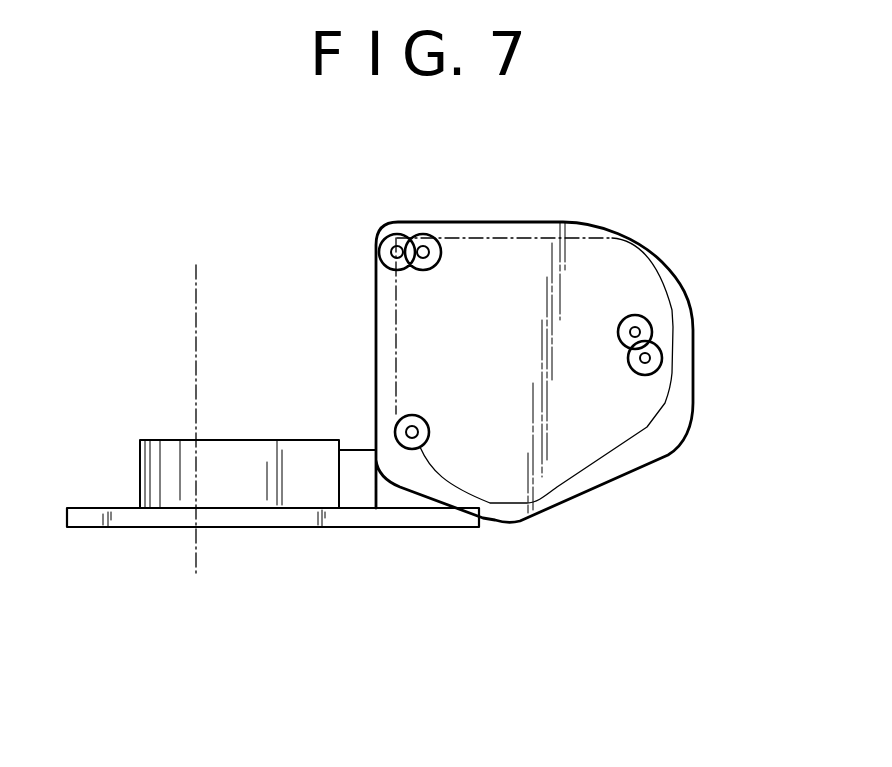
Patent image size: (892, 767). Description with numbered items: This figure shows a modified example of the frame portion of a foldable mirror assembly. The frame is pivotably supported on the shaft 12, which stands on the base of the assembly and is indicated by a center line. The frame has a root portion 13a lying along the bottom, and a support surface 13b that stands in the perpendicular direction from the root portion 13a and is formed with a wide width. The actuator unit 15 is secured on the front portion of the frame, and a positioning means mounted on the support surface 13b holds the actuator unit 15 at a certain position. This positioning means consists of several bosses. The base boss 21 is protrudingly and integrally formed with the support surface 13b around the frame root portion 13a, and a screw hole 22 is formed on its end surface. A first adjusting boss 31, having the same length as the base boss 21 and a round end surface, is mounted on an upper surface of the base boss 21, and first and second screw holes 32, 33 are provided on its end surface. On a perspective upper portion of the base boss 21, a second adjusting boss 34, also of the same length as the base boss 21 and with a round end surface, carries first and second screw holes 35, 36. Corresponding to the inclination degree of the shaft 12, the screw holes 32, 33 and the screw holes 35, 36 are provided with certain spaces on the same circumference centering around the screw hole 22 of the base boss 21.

The shaft 12 is at (196, 310).
The root portion 13a is at (277, 520).
The support surface 13b is at (662, 443).
The actuator unit 15 is at (587, 250).
The base boss 21 is at (406, 418).
The screw hole 22 is at (410, 432).
The first adjusting boss 31 is at (383, 263).
The first screw hole 32 is at (424, 246).
The second screw hole 33 is at (396, 246).
The second adjusting boss 34 is at (652, 323).
The first screw hole 35 is at (647, 359).
The second screw hole 36 is at (637, 333).